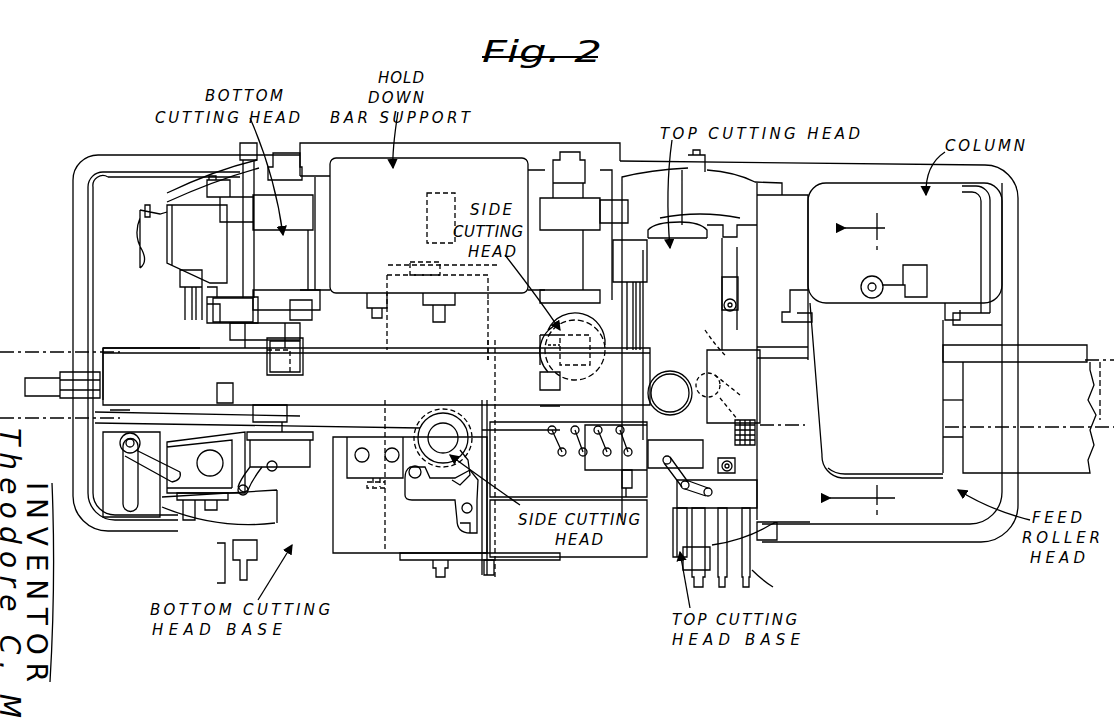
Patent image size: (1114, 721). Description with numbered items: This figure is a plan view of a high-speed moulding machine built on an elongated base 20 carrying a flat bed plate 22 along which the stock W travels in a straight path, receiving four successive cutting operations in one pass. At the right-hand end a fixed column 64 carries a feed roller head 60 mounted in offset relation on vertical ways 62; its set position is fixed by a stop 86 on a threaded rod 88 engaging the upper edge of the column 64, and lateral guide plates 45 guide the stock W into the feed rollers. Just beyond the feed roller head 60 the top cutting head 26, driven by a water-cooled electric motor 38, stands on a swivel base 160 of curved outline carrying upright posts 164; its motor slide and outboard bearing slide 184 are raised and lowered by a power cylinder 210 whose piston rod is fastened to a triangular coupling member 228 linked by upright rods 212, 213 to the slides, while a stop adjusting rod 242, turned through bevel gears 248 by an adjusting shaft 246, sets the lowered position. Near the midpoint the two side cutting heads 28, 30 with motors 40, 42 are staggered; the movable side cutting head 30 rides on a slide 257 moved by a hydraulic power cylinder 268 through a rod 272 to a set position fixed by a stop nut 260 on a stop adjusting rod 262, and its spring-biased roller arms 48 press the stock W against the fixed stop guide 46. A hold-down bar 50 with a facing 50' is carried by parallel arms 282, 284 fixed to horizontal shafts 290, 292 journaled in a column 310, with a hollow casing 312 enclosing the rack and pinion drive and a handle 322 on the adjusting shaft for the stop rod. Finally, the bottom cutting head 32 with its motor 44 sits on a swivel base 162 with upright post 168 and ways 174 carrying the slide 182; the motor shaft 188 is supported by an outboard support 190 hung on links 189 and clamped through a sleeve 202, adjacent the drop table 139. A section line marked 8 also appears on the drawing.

The base 20 is at (148, 174).
The bed plate 22 is at (1050, 465).
The top cutting head 26 is at (726, 250).
The side cutting head 28 is at (545, 326).
The side cutting head 30 is at (488, 437).
The bottom cutting head 32 is at (313, 313).
The electric motor 38 is at (695, 228).
The electric motor 40 is at (548, 343).
The electric motor 42 is at (445, 413).
The electric motor 44 is at (312, 300).
The lateral guide plates 45 is at (975, 362).
The stop guide 46 is at (469, 341).
The roller arms 48 is at (560, 442).
The hold-down bar 50 is at (376, 376).
The facing 50' is at (129, 387).
The feed roller head 60 is at (945, 403).
The ways 62 is at (962, 322).
The column 64 is at (982, 252).
The stop 86 is at (898, 305).
The threaded rod 88 is at (861, 285).
The section line 8 is at (871, 364).
The drop table 139 is at (162, 330).
The swivel base 160 is at (755, 550).
The swivel base 162 is at (300, 545).
The upright post 164 is at (748, 270).
The upright post 168 is at (175, 210).
The ways 174 is at (224, 282).
The slide 182 is at (238, 240).
The outboard bearing slide 184 is at (630, 480).
The motor shaft 188 is at (252, 420).
The links 189 is at (270, 485).
The outboard support 190 is at (280, 462).
The sleeve 202 is at (285, 440).
The power cylinder 210 is at (720, 345).
The upright rod 212 is at (740, 470).
The upright rod 213 is at (724, 305).
The triangular coupling member 228 is at (718, 340).
The stop adjusting rod 242 is at (720, 383).
The adjusting shaft 246 is at (774, 589).
The bevel gears 248 is at (736, 394).
The slide 257 is at (490, 393).
The stop nut 260 is at (450, 440).
The stop adjusting rod 262 is at (500, 480).
The hydraulic power cylinder 268 is at (427, 215).
The rod 272 is at (436, 270).
The arm 282 is at (262, 365).
The arm 284 is at (540, 378).
The horizontal shaft 290 is at (265, 305).
The horizontal shaft 292 is at (586, 333).
The column 310 is at (503, 158).
The hollow casing 312 is at (460, 158).
The handle 322 is at (440, 312).
The stock W is at (1103, 360).